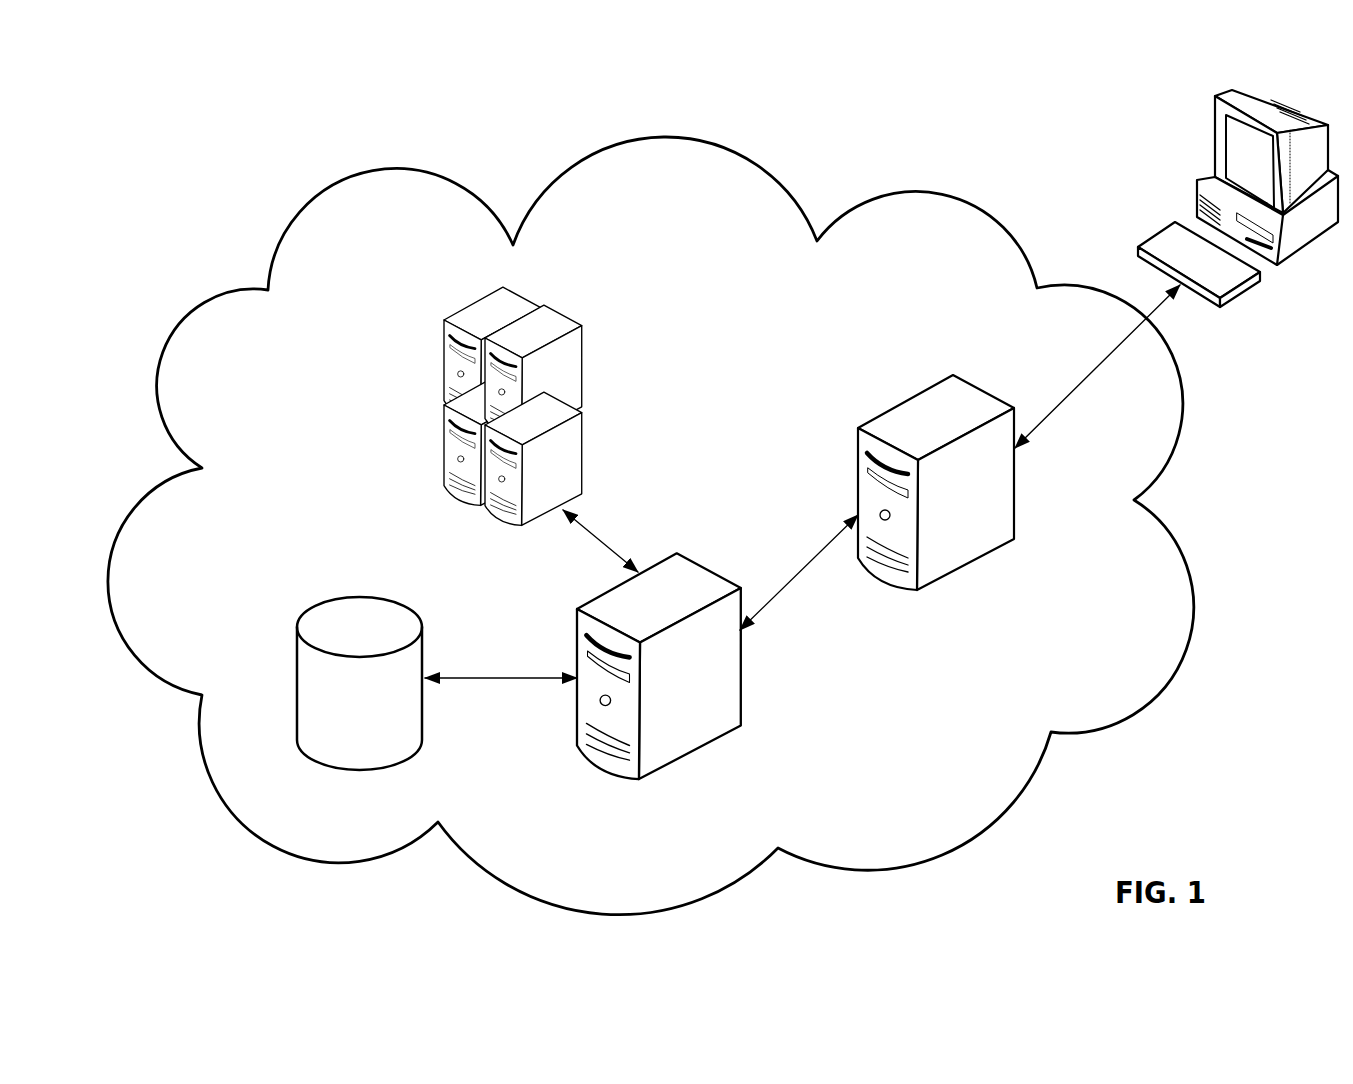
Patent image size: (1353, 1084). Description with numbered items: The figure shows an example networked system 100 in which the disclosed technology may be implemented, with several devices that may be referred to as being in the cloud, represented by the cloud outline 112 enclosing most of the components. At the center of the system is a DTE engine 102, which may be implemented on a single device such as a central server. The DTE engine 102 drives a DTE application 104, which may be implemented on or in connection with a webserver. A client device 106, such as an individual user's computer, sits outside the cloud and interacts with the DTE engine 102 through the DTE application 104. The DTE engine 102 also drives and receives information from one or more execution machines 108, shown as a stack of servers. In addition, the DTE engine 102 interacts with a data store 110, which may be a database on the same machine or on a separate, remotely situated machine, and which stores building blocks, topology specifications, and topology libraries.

The networked system 100 is at (132, 200).
The DTE engine 102 is at (600, 595).
The DTE application 104 is at (917, 393).
The client device 106 is at (1210, 173).
The execution machines 108 is at (467, 302).
The data store 110 is at (317, 607).
The network cloud 112 is at (142, 498).